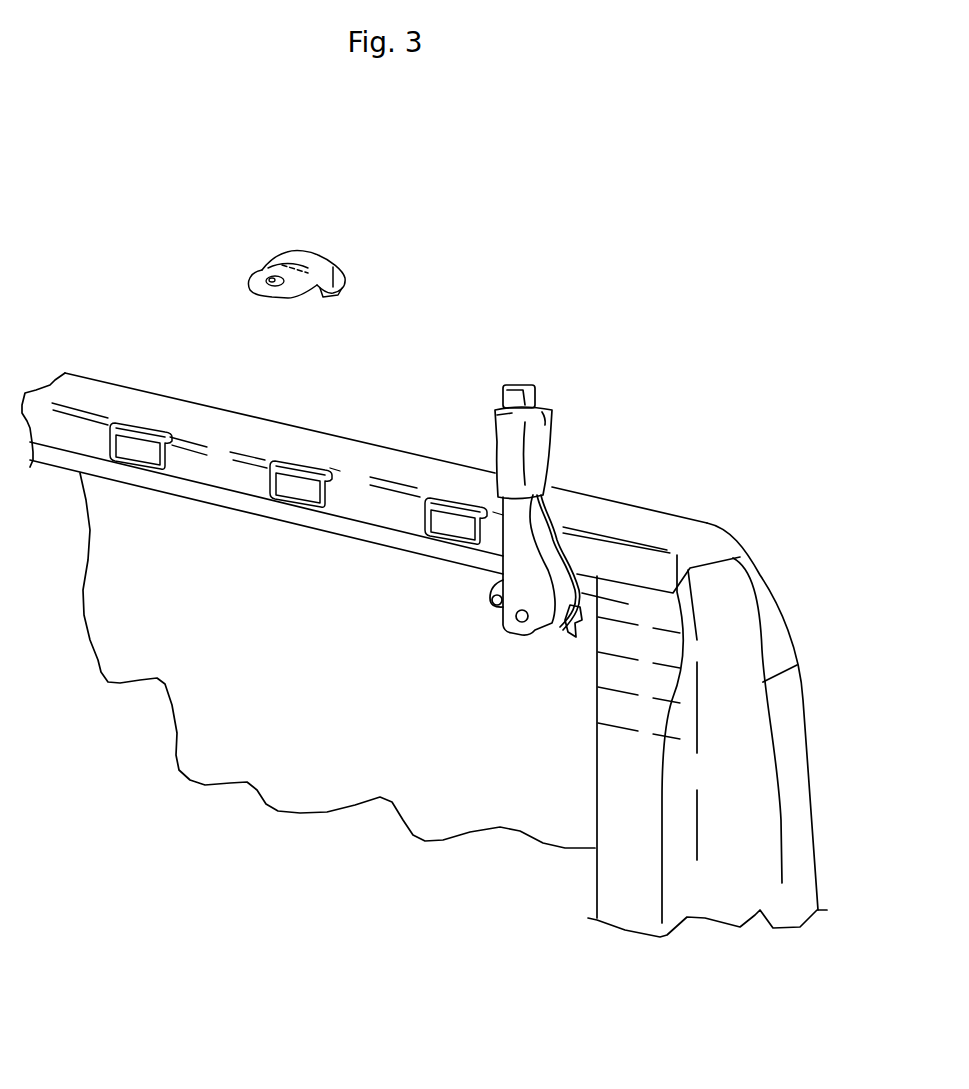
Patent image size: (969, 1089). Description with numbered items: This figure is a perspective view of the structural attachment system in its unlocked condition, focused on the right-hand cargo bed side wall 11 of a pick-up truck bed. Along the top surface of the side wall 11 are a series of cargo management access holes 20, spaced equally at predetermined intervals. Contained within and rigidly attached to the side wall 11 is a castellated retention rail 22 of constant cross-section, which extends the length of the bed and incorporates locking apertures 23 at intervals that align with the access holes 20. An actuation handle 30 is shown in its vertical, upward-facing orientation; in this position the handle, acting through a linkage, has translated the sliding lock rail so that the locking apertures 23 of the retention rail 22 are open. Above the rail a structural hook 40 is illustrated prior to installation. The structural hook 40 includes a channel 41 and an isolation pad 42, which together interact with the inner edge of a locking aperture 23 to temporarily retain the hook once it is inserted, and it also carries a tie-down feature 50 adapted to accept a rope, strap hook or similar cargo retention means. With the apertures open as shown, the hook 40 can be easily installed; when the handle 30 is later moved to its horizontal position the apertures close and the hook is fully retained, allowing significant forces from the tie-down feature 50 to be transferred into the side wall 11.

The cargo bed side wall 11 is at (672, 512).
The cargo management access holes 20 is at (144, 426).
The castellated retention rail 22 is at (373, 540).
The locking apertures 23 is at (284, 467).
The actuation handle 30 is at (547, 408).
The structural hook 40 is at (320, 255).
The channel 41 is at (342, 268).
The isolation pad 42 is at (326, 292).
The tie-down feature 50 is at (250, 277).